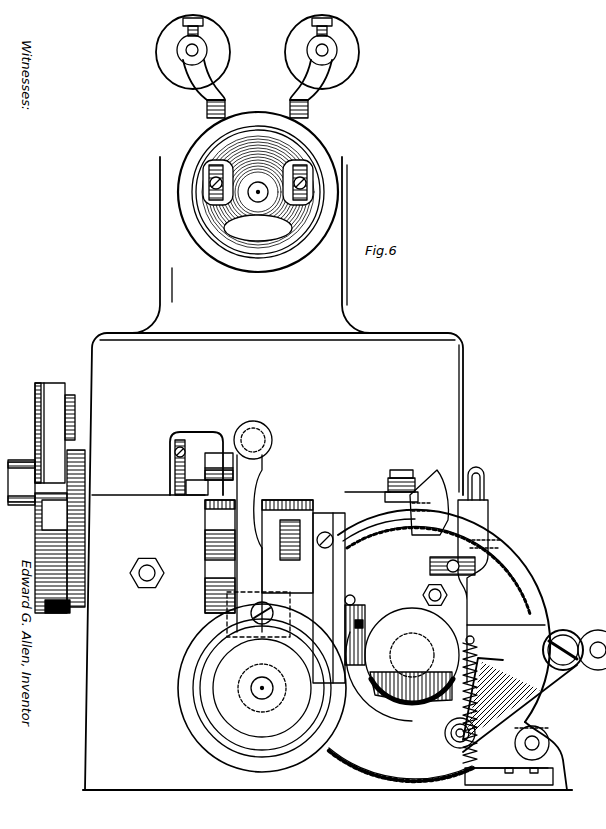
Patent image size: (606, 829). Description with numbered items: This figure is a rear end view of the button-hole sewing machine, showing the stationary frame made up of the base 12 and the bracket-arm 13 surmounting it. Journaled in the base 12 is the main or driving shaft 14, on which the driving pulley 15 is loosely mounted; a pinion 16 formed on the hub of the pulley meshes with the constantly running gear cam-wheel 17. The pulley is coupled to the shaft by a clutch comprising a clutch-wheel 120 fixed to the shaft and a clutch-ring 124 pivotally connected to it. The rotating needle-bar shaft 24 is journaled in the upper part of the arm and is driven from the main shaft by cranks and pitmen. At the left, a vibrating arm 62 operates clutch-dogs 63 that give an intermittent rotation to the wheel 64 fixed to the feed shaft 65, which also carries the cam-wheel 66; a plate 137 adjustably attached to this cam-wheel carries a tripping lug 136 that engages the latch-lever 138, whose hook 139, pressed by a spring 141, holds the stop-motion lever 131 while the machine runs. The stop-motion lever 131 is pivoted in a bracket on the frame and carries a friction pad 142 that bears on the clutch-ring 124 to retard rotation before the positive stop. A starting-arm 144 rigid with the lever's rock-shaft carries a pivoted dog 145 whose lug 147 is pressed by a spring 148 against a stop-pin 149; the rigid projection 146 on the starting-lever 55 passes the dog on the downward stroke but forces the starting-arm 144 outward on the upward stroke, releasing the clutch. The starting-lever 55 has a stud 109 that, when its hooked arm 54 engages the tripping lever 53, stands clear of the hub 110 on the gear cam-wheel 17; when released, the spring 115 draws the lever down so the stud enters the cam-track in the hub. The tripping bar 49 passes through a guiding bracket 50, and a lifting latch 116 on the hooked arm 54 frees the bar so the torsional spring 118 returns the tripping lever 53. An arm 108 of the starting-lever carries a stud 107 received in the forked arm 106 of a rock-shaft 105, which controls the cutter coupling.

The base 12 is at (178, 652).
The bracket-arm 13 is at (327, 473).
The main or driving shaft 14 is at (262, 700).
The driving pulley 15 is at (182, 710).
The pinion 16 is at (251, 652).
The gear cam-wheel 17 is at (478, 766).
The rotating needle-bar shaft 24 is at (259, 203).
The bar 49 is at (501, 559).
The steadying and guiding bracket 50 is at (486, 482).
The tripping lever 53 is at (488, 522).
The retaining hooked arm 54 is at (437, 470).
The starting-lever 55 is at (536, 707).
The vibrating arm 62 is at (86, 562).
The clutch-dogs 63 is at (42, 530).
The wheel 64 is at (50, 383).
The feed shaft 65 is at (22, 462).
The cam-wheel 66 is at (175, 458).
The rock-shaft 105 is at (546, 744).
The arm 106 is at (536, 735).
The pin or stud 107 is at (446, 732).
The arm 108 is at (520, 705).
The stud 109 is at (350, 603).
The hub 110 is at (376, 704).
The spring 115 is at (482, 699).
The spring-pressed lifting latch 116 is at (492, 542).
The torsional spring 118 is at (381, 486).
The clutch-wheel 120 is at (238, 668).
The clutch-ring 124 is at (222, 732).
The stop-motion lever 131 is at (252, 543).
The tripping lug or projection 136 is at (190, 497).
The plate 137 is at (200, 433).
The latch-lever 138 is at (205, 474).
The hook 139 is at (258, 457).
The spring 141 is at (234, 491).
The friction pad 142 is at (215, 530).
The starting-arm 144 is at (357, 534).
The pivoted dog 145 is at (332, 752).
The rigid projection 146 is at (352, 594).
The lug 147 is at (360, 620).
The spring 148 is at (334, 628).
The stop-pin 149 is at (372, 637).